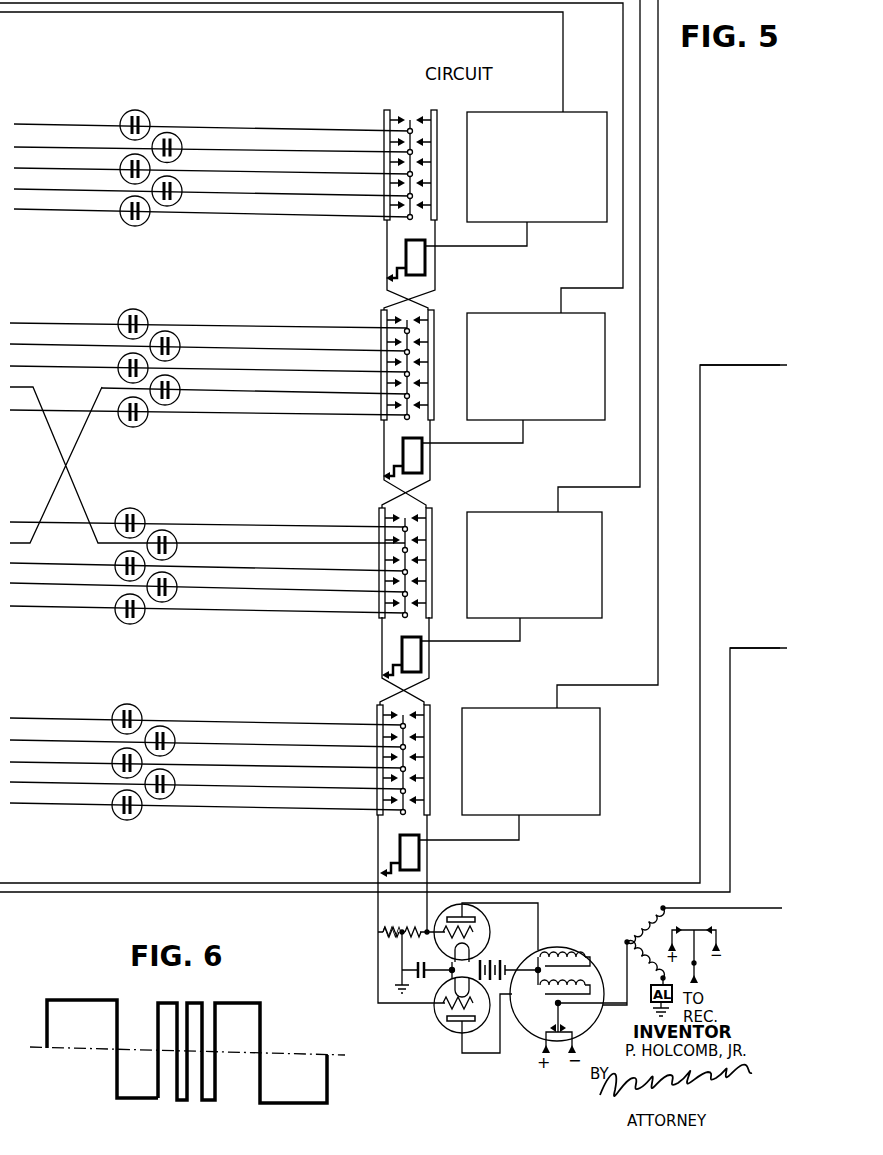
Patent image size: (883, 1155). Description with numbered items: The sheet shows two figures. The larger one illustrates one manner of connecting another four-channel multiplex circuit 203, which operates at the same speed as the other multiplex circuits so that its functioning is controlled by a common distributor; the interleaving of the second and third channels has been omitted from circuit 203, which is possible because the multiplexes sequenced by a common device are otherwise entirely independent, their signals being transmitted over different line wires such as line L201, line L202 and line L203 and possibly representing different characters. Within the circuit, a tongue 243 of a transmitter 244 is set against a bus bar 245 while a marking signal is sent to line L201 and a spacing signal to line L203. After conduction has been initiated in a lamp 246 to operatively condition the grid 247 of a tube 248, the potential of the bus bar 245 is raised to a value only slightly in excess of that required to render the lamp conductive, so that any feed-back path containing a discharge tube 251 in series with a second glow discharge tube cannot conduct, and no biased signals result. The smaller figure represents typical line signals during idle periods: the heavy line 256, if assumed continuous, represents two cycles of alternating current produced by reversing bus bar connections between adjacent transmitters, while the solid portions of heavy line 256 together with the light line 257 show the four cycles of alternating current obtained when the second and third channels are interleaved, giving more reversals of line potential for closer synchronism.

In FIG. 5, the four-channel multiplex circuit 203 is at (472, 480).
In FIG. 5, the tongue 243 is at (407, 299).
In FIG. 5, the transmitter 244 is at (433, 303).
In FIG. 5, the bus bar 245 is at (437, 320).
In FIG. 5, the lamp 246 is at (130, 314).
In FIG. 5, the discharge tube 251 is at (168, 330).
In FIG. 5, the grid 247 is at (477, 932).
In FIG. 5, the tube 248 is at (478, 917).
In FIG. 6, the heavy line 256 is at (95, 1000).
In FIG. 6, the light line 257 is at (158, 1010).
In FIG. 5, the line L201 is at (728, 365).
In FIG. 5, the line L202 is at (750, 648).
In FIG. 5, the line L203 is at (750, 908).